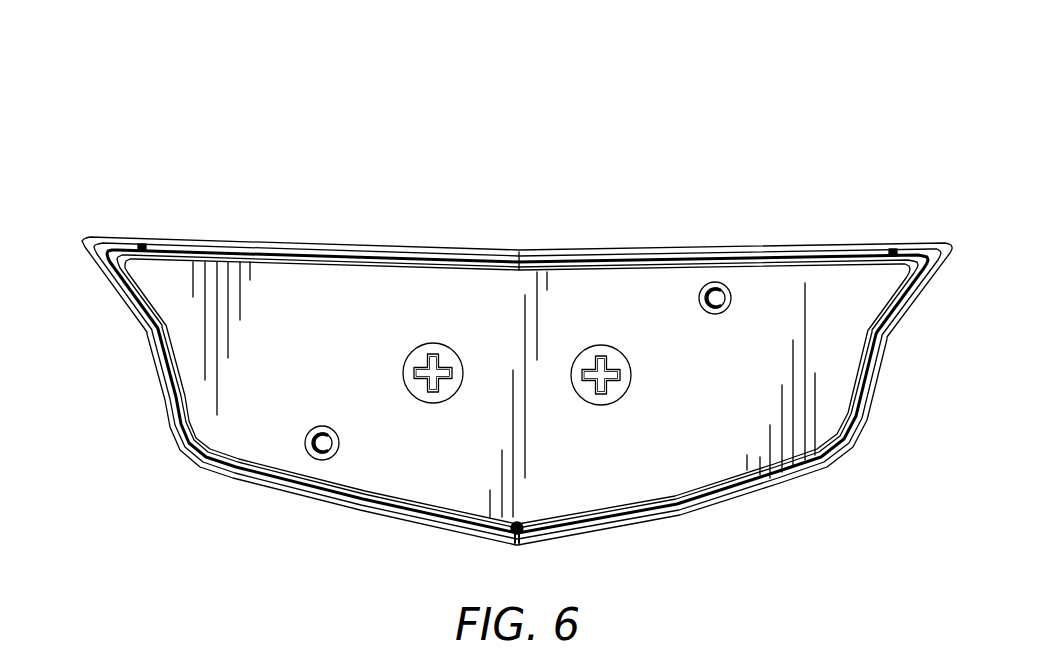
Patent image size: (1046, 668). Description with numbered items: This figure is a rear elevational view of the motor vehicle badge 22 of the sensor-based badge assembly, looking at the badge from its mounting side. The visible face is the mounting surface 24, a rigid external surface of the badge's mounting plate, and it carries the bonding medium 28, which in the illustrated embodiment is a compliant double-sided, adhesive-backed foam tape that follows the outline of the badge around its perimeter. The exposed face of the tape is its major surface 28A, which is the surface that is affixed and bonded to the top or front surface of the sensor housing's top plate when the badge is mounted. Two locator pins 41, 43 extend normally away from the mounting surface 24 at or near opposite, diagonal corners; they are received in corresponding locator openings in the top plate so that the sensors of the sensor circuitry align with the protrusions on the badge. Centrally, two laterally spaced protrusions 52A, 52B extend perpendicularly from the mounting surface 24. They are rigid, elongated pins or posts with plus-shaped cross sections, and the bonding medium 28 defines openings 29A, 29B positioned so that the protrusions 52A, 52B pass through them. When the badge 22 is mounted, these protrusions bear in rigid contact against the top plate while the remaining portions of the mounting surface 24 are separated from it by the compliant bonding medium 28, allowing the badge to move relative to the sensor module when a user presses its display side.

The motor vehicle badge 22 is at (130, 134).
The mounting surface 24 is at (115, 260).
The bonding medium 28 is at (833, 428).
The major surface of bonding medium 28A is at (752, 450).
The first opening of bonding medium 29A is at (448, 360).
The second opening of bonding medium 29B is at (577, 362).
The first locator pin 41 is at (720, 297).
The second locator pin 43 is at (318, 460).
The first protrusion 52A is at (460, 358).
The second protrusion 52B is at (575, 352).